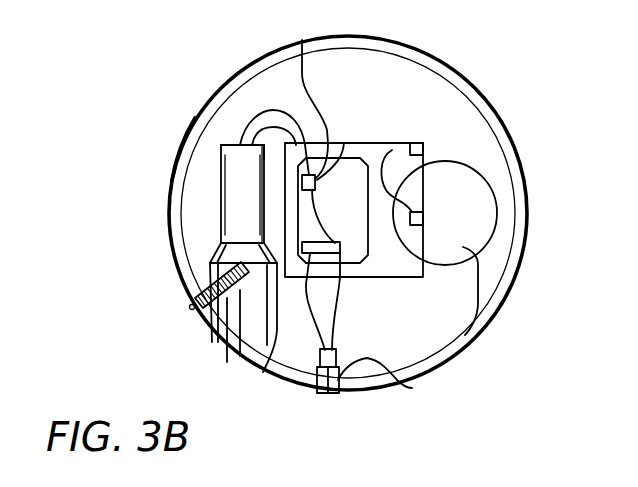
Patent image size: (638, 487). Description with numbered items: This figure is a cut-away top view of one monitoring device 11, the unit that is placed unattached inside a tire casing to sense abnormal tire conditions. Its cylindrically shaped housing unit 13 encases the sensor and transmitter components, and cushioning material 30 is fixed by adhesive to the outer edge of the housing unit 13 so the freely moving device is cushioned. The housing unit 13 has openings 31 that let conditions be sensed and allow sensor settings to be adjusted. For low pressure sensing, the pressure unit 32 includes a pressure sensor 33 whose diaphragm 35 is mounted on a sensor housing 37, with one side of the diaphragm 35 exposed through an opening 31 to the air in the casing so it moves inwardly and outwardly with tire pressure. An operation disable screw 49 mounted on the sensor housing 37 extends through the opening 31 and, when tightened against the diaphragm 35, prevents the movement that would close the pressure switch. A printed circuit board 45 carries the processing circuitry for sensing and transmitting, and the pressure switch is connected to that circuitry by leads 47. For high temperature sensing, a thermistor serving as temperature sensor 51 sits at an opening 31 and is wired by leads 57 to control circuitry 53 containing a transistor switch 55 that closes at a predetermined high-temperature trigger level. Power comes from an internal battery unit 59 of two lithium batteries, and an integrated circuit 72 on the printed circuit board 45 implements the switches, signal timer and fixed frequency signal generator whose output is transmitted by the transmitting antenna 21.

The monitoring device 11 is at (453, 325).
The housing unit 13 is at (457, 77).
The transmitting antenna 21 is at (420, 150).
The cushioning material 30 is at (186, 117).
The openings 31 is at (332, 393).
The pressure unit 32 is at (237, 152).
The pressure sensor 33 is at (221, 169).
The diaphragm 35 is at (221, 243).
The sensor housing 37 is at (221, 202).
The printed circuit board 45 is at (302, 40).
The leads 47 is at (257, 126).
The operation disable screw 49 is at (189, 306).
The temperature sensor 51 is at (395, 380).
The control circuitry 53 is at (344, 143).
The transistor switch 55 is at (338, 160).
The leads 57 is at (336, 303).
The battery unit 59 is at (492, 320).
The integrated circuit 72 is at (263, 372).